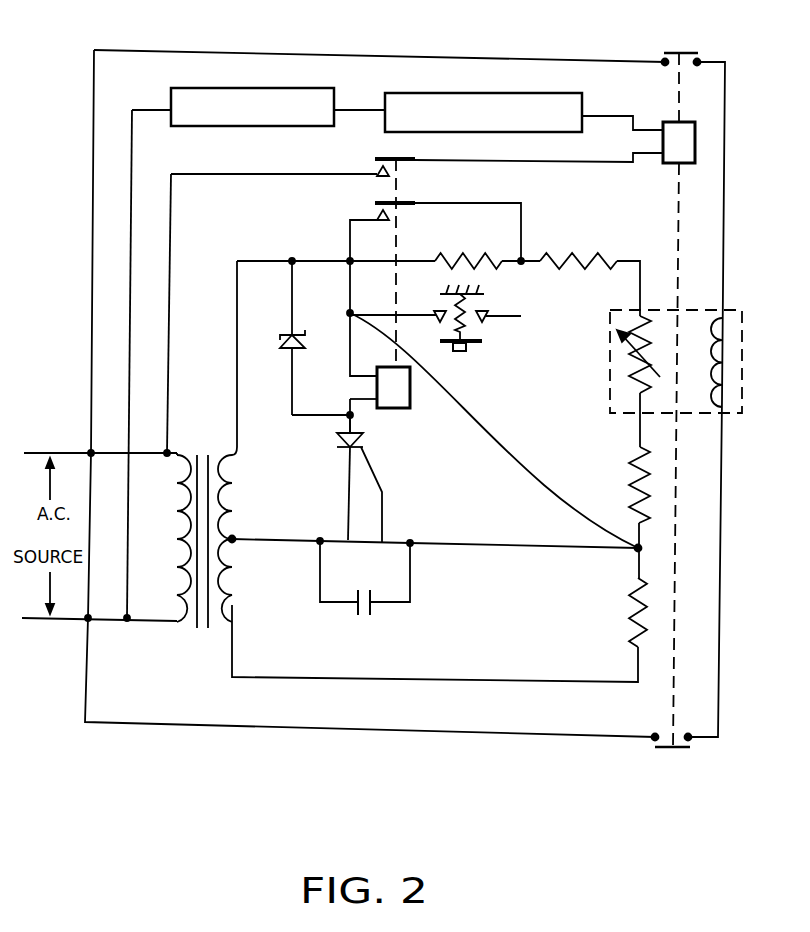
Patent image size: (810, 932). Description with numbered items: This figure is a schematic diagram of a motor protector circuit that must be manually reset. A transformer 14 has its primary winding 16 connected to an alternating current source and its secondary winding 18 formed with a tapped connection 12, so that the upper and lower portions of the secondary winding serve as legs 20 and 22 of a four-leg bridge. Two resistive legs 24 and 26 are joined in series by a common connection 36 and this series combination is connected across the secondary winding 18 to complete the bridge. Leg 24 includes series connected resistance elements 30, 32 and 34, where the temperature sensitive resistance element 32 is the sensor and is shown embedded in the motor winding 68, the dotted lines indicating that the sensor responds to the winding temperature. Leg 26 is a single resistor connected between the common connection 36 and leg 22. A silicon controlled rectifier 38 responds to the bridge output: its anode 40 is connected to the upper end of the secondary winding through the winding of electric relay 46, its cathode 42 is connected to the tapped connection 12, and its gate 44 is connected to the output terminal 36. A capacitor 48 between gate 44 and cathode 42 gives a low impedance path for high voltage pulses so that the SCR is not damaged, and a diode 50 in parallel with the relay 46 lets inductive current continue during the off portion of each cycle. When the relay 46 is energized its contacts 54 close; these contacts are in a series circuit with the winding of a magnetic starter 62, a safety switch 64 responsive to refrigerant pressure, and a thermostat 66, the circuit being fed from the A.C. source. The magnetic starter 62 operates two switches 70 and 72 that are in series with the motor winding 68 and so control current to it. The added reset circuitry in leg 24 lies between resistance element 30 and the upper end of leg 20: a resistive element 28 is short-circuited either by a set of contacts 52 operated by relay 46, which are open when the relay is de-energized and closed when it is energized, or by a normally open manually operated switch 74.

The tapped connection 12 is at (234, 538).
The transformer 14 is at (204, 635).
The primary winding 16 is at (176, 545).
The secondary winding 18 is at (226, 568).
The leg 20 is at (232, 488).
The leg 22 is at (222, 602).
The leg 24 is at (494, 430).
The leg 26 is at (632, 618).
The resistive element 28 is at (450, 258).
The resistance element 30 is at (565, 258).
The resistance element 32 is at (612, 377).
The resistance element 34 is at (631, 478).
The common connection 36 is at (636, 551).
The silicon controlled rectifier 38 is at (364, 445).
The anode 40 is at (337, 430).
The cathode 42 is at (347, 481).
The gate 44 is at (381, 477).
The electric relay 46 is at (410, 393).
The capacitor 48 is at (372, 607).
The diode 50 is at (282, 350).
The contacts 52 is at (375, 203).
The contacts 54 is at (375, 160).
The magnetic starter 62 is at (663, 138).
The safety switch 64 is at (475, 93).
The thermostat 66 is at (232, 88).
The motor winding 68 is at (724, 364).
The switch 70 is at (662, 52).
The switch 72 is at (655, 751).
The manually operated switch 74 is at (466, 349).